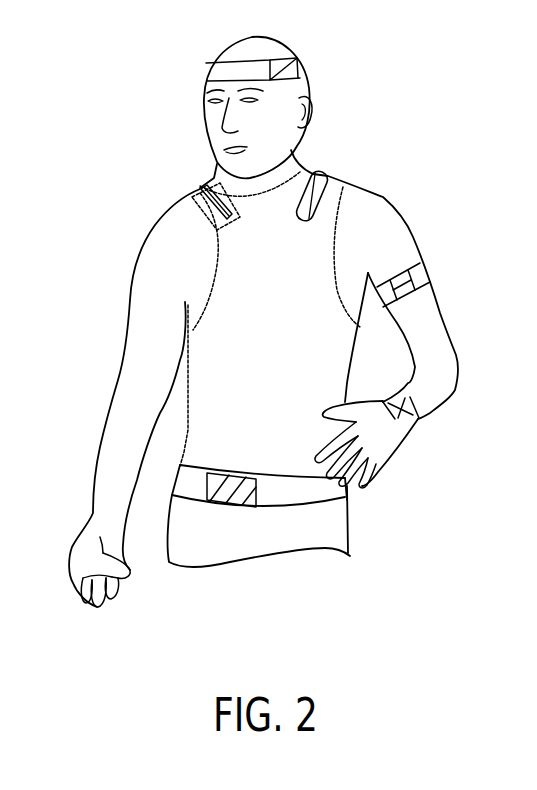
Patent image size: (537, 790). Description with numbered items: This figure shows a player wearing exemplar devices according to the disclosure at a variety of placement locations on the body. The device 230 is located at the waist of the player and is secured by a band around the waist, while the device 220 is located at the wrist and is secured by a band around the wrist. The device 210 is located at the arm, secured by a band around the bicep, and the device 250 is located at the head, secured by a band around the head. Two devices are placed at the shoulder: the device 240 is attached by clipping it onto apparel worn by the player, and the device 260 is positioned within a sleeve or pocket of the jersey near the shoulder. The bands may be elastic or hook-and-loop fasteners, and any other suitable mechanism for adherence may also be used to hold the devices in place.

The device 210 is at (420, 276).
The device 220 is at (410, 424).
The device 230 is at (303, 507).
The device 240 is at (323, 172).
The device 250 is at (287, 70).
The device 260 is at (203, 191).